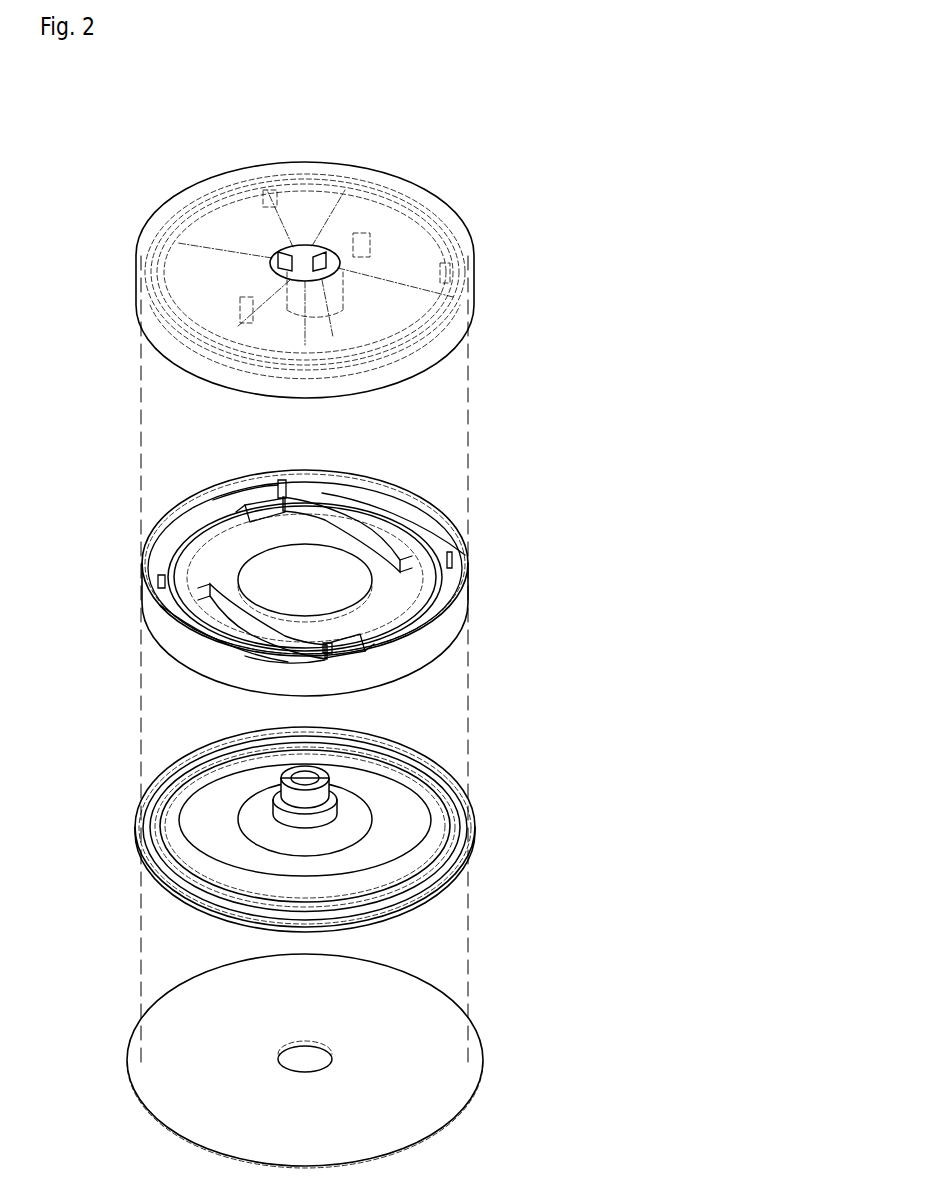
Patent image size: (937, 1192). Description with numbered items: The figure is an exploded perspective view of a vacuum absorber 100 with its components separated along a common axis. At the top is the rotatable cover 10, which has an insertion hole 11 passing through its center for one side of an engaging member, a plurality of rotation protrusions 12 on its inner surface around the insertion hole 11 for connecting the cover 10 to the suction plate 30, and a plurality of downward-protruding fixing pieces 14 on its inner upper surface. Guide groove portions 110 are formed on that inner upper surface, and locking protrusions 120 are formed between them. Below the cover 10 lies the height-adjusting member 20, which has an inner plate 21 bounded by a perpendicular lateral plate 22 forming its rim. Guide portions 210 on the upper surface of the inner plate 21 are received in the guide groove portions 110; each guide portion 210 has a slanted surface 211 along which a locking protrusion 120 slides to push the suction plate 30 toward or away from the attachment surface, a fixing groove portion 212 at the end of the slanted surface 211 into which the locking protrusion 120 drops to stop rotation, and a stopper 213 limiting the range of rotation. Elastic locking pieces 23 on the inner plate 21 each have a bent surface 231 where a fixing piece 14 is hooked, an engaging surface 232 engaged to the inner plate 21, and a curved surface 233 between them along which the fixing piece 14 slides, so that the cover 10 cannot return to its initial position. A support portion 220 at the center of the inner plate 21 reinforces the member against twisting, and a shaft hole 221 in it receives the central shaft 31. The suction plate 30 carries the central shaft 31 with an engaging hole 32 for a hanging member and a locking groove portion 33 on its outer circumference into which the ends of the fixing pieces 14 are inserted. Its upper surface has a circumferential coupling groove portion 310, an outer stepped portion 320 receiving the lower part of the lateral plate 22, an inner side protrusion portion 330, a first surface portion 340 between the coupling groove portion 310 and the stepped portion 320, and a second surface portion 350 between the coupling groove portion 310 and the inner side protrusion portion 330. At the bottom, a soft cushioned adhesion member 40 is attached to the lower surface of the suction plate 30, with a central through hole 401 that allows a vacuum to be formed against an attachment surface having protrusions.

The vacuum absorber 100 is at (592, 119).
The cover 10 is at (476, 208).
The insertion hole 11 is at (300, 242).
The rotation protrusions 12 is at (320, 258).
The fixing pieces 14 is at (196, 374).
The guide groove portions 110 is at (236, 192).
The locking protrusions 120 is at (206, 190).
The height-adjusting member 20 is at (468, 470).
The inner plate 21 is at (408, 604).
The lateral plate 22 is at (376, 518).
The elastic locking pieces 23 is at (440, 530).
The guide portions 210 is at (208, 498).
The slanted surface 211 is at (250, 497).
The fixing groove portion 212 is at (272, 493).
The stopper 213 is at (280, 482).
The support portion 220 is at (165, 532).
The shaft hole 221 is at (452, 648).
The bent surface 231 is at (428, 578).
The engaging surface 232 is at (288, 502).
The curved surface 233 is at (452, 556).
The suction plate 30 is at (175, 727).
The central shaft 31 is at (336, 779).
The engaging hole 32 is at (393, 732).
The locking groove portion 33 is at (340, 820).
The coupling groove portion 310 is at (155, 813).
The stepped portion 320 is at (158, 870).
The inner side protrusion portion 330 is at (162, 771).
The first surface portion 340 is at (150, 860).
The second surface portion 350 is at (148, 800).
The adhesion member 40 is at (152, 988).
The through hole 401 is at (333, 1052).